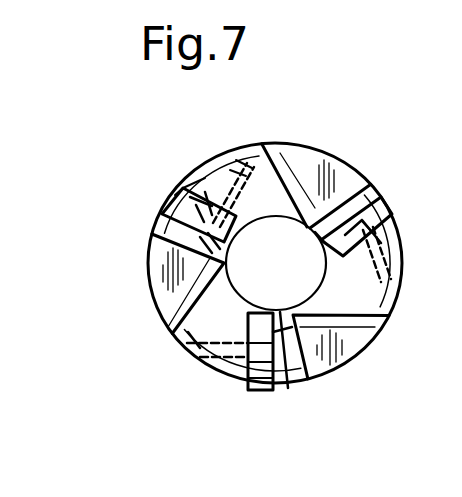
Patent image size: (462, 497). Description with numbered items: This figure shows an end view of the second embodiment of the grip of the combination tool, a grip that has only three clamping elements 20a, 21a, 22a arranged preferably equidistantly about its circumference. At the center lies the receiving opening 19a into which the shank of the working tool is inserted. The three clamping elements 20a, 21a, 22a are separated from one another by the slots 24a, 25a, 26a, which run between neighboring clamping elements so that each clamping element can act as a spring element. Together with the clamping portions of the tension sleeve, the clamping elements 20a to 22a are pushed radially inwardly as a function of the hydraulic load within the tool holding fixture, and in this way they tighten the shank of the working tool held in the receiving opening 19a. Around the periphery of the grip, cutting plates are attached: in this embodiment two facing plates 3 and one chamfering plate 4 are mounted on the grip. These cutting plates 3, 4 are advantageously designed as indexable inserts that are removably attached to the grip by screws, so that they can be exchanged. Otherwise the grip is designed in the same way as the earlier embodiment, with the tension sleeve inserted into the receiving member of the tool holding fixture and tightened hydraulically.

The receiving opening 19a is at (290, 240).
The clamping element 20a is at (253, 188).
The clamping element 21a is at (168, 285).
The clamping element 22a is at (345, 338).
The slot 24a is at (163, 221).
The slot 25a is at (293, 370).
The slot 26a is at (358, 195).
The facing plate 3 is at (370, 228).
The chamfering plate 4 is at (262, 366).